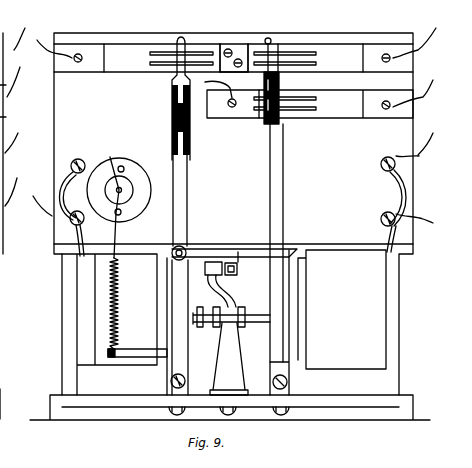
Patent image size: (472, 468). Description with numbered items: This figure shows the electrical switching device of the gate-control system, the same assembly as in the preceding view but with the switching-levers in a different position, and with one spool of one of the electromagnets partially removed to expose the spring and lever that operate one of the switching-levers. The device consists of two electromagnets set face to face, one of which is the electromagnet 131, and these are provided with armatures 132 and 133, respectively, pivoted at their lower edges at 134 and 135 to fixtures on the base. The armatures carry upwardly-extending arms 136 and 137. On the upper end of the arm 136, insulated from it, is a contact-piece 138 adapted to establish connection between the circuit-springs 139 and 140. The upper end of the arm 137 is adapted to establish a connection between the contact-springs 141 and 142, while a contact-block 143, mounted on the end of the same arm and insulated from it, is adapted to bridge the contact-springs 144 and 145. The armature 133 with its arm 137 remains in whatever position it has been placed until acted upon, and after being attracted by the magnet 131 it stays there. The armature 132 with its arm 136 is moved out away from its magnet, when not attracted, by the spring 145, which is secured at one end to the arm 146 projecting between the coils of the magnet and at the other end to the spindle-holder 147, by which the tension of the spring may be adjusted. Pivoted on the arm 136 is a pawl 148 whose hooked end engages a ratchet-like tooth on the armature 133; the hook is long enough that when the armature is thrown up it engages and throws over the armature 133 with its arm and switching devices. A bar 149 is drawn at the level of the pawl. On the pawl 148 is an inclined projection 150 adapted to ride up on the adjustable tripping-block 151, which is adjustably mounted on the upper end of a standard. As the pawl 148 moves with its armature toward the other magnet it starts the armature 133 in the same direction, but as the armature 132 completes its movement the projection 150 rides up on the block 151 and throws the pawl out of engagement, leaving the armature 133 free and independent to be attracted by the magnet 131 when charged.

The electromagnet 131 is at (352, 263).
The armature 132 is at (178, 335).
The armature 133 is at (279, 339).
The pivot 134 is at (172, 382).
The pivot 135 is at (291, 384).
The arm 136 is at (187, 203).
The arm 137 is at (274, 193).
The contact-piece 138 is at (181, 38).
The circuit-spring 139 is at (167, 50).
The circuit-spring 140 is at (212, 52).
The contact-spring 141 is at (259, 116).
The contact-spring 142 is at (302, 105).
The contact-block 143 is at (268, 38).
The contact-spring 144 is at (251, 50).
The contact-spring / spring 145 is at (52, 336).
The arm 146 is at (138, 357).
The spindle-holder 147 is at (107, 156).
The pawl 148 is at (197, 252).
The bar 149 is at (284, 246).
The inclined projection 150 is at (239, 248).
The tripping-block 151 is at (238, 277).